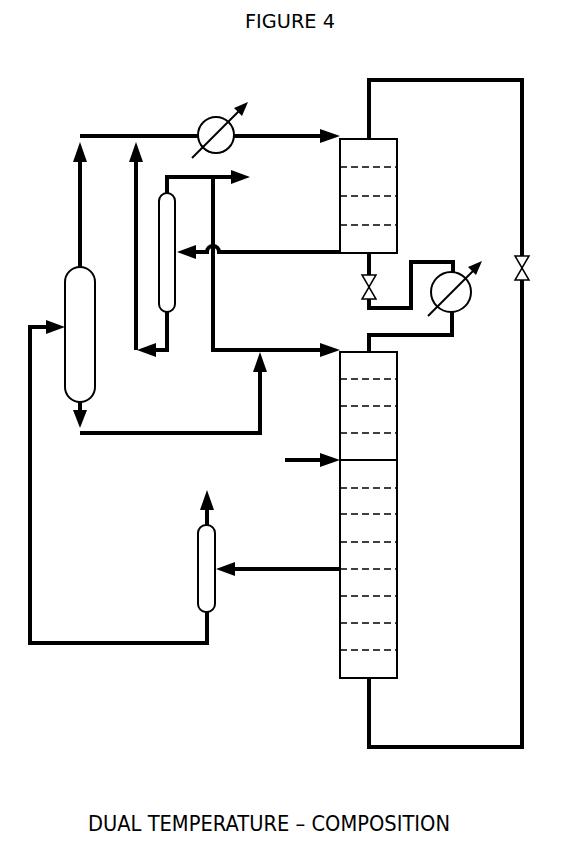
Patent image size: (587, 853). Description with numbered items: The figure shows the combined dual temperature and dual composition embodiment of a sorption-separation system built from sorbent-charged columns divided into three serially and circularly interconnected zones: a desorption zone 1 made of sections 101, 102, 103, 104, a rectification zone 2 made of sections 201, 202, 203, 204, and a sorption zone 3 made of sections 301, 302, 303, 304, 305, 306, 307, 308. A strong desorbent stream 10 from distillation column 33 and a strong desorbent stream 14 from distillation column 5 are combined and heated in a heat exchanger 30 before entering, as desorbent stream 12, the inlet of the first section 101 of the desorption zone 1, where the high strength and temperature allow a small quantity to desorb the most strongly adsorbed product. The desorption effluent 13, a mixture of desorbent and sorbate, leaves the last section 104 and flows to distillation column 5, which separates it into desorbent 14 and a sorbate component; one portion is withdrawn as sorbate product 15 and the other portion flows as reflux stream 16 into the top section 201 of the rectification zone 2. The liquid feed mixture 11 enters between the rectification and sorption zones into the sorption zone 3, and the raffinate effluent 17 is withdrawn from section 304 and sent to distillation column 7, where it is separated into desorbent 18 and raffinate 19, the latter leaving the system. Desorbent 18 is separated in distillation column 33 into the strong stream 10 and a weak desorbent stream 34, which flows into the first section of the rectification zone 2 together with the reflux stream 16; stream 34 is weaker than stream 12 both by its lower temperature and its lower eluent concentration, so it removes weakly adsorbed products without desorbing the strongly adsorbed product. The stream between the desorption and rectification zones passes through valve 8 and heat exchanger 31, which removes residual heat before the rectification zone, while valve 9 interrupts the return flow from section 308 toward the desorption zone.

The desorption zone 1 is at (382, 196).
The rectification zone 2 is at (383, 406).
The sorption zone 3 is at (383, 569).
The distillation column 5 is at (176, 226).
The distillation column 7 is at (216, 543).
The valve 8 is at (363, 288).
The valve 9 is at (530, 270).
The strong desorbent stream 10 is at (80, 197).
The liquid feed mixture 11 is at (302, 460).
The desorbent stream 12 is at (258, 135).
The desorption effluent 13 is at (275, 252).
The desorbent stream 14 is at (136, 195).
The sorbate product 15 is at (223, 180).
The reflux stream 16 is at (277, 350).
The raffinate effluent 17 is at (258, 569).
The desorbent stream 18 is at (98, 643).
The raffinate 19 is at (202, 496).
The heat exchanger 30 is at (210, 118).
The heat exchanger 31 is at (466, 305).
The distillation column 33 is at (63, 306).
The weak desorbent stream 34 is at (148, 433).
The first section of desorption zone 101 is at (368, 155).
The section of desorption zone 102 is at (368, 184).
The section of desorption zone 103 is at (368, 213).
The last section of desorption zone 104 is at (368, 242).
The top section of rectification zone 201 is at (368, 368).
The section of rectification zone 202 is at (368, 395).
The section of rectification zone 203 is at (368, 422).
The section of rectification zone 204 is at (368, 449).
The top section of sorption zone 301 is at (368, 477).
The section of sorption zone 302 is at (368, 503).
The section of sorption zone 303 is at (368, 531).
The section of sorption zone 304 is at (368, 558).
The section of sorption zone 305 is at (368, 585).
The section of sorption zone 306 is at (368, 612).
The section of sorption zone 307 is at (368, 639).
The last section of sorption zone 308 is at (368, 667).